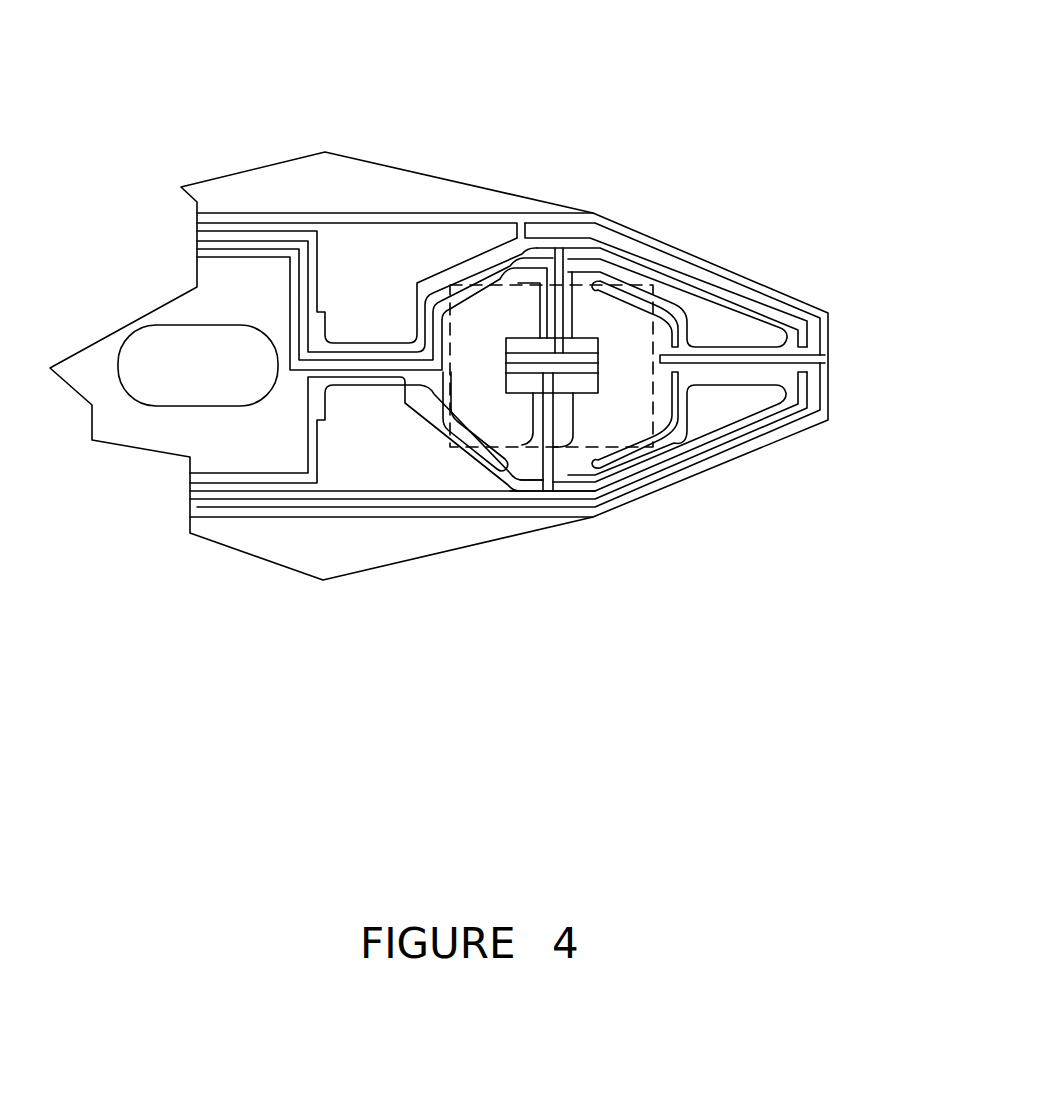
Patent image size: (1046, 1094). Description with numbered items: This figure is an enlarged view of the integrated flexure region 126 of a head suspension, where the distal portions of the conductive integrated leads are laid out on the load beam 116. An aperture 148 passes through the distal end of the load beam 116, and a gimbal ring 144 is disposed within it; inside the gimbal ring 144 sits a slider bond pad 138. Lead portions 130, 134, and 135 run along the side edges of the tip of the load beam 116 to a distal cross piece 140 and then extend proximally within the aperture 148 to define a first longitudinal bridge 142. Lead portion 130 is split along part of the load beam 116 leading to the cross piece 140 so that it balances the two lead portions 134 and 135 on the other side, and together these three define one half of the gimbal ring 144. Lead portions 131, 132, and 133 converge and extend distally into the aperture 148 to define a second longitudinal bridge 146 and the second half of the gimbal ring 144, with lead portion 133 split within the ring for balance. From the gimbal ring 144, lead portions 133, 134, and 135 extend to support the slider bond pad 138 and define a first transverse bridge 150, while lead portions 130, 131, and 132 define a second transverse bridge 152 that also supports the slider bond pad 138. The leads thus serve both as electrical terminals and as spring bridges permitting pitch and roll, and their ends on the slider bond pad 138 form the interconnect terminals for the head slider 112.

The head slider 112 is at (613, 317).
The load beam 116 is at (299, 172).
The flexure region 126 is at (439, 300).
The lead portion 130 is at (202, 219).
The lead portion 131 is at (204, 237).
The lead portion 132 is at (204, 253).
The lead portion 133 is at (197, 478).
The lead portion 134 is at (197, 495).
The lead portion 135 is at (196, 513).
The slider bond pad 138 is at (600, 368).
The distal cross piece 140 is at (832, 357).
The first longitudinal bridge 142 is at (733, 395).
The gimbal ring 144 is at (688, 317).
The second longitudinal bridge 146 is at (382, 340).
The aperture 148 is at (363, 420).
The first transverse bridge 150 is at (528, 417).
The second transverse bridge 152 is at (573, 312).